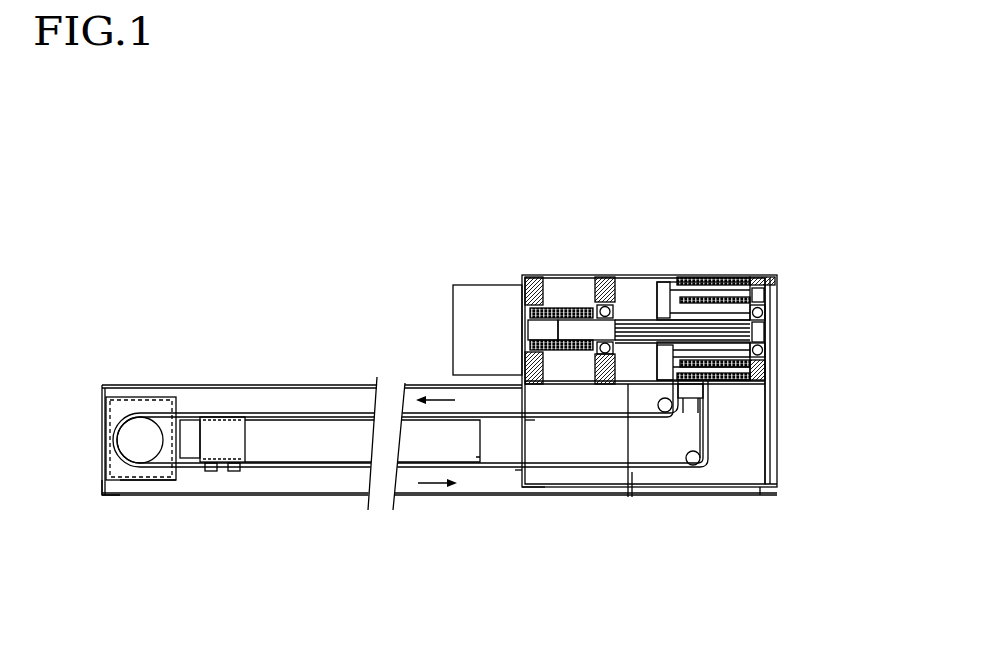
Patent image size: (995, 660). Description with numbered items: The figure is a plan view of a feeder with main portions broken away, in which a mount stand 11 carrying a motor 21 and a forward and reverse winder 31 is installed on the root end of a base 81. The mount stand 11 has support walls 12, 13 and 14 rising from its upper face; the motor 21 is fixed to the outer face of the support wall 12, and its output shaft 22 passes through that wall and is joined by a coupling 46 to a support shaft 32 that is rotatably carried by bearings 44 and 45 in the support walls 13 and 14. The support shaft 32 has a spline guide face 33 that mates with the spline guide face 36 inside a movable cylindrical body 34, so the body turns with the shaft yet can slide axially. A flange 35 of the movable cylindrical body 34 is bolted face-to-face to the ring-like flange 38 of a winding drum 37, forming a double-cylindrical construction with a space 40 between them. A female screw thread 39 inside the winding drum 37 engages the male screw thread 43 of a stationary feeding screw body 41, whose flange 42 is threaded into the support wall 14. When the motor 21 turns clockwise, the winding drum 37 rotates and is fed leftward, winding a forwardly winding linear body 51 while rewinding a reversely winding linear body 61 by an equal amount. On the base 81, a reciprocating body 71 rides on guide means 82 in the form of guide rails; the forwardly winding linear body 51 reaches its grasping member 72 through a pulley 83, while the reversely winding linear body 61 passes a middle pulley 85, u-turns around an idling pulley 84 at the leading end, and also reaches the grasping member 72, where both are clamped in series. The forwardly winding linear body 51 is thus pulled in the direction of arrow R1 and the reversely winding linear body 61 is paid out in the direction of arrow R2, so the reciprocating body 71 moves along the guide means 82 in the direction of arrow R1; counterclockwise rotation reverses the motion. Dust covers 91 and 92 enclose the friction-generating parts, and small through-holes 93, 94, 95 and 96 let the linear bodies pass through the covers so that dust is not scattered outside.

The mount stand 11 is at (538, 275).
The support wall 12 is at (531, 266).
The support wall 13 is at (602, 290).
The support wall 14 is at (775, 273).
The motor 21 is at (470, 300).
The output shaft 22 is at (573, 327).
The forward and reverse winder 31 is at (630, 290).
The support shaft 32 is at (561, 308).
The guide face 33 is at (634, 290).
The movable cylindrical body 34 is at (760, 390).
The flange 35 is at (578, 386).
The guide face 36 is at (742, 383).
The winding drum 37 is at (720, 383).
The ring-like flange 38 is at (652, 385).
The female screw thread 39 is at (713, 280).
The space 40 is at (724, 285).
The stationary feeding screw body 41 is at (773, 484).
The flange 42 is at (778, 365).
The male screw thread 43 is at (744, 285).
The bearing 44 is at (528, 420).
The bearing 45 is at (778, 310).
The coupling 46 is at (548, 327).
The forwardly winding linear body 51 is at (710, 290).
The reversely winding linear body 61 is at (121, 433).
The reciprocating body 71 is at (220, 436).
The grasping member 72 is at (208, 472).
The base 81 is at (408, 483).
The guide means 82 is at (407, 443).
The pulley 83 is at (696, 466).
The idling pulley 84 is at (103, 496).
The middle pulley 85 is at (665, 413).
The dust cover 91 is at (545, 488).
The dust cover 92 is at (110, 394).
The through-hole 93 is at (515, 476).
The through-hole 94 is at (558, 388).
The through-hole 95 is at (155, 482).
The through-hole 96 is at (165, 398).
The arrow R1 is at (443, 500).
The arrow R2 is at (403, 384).